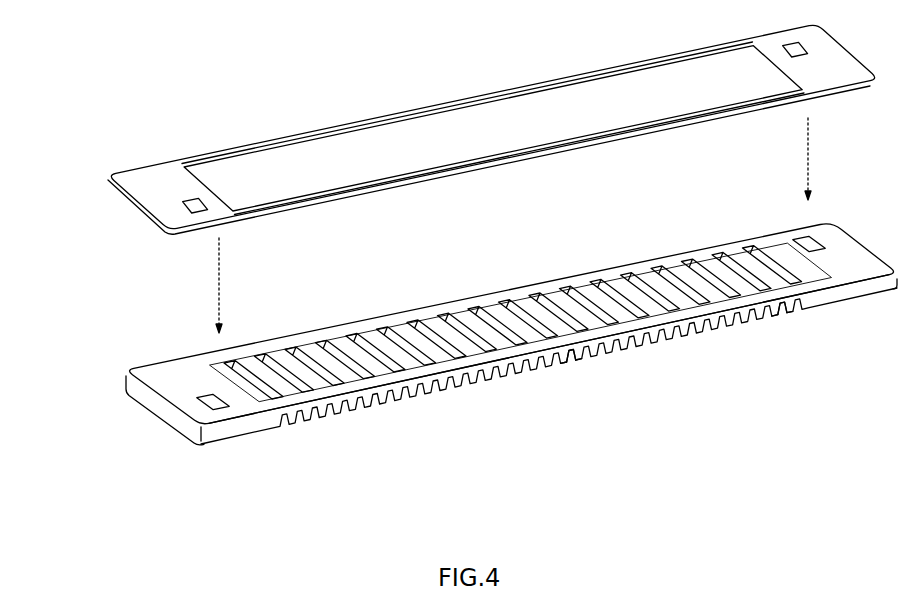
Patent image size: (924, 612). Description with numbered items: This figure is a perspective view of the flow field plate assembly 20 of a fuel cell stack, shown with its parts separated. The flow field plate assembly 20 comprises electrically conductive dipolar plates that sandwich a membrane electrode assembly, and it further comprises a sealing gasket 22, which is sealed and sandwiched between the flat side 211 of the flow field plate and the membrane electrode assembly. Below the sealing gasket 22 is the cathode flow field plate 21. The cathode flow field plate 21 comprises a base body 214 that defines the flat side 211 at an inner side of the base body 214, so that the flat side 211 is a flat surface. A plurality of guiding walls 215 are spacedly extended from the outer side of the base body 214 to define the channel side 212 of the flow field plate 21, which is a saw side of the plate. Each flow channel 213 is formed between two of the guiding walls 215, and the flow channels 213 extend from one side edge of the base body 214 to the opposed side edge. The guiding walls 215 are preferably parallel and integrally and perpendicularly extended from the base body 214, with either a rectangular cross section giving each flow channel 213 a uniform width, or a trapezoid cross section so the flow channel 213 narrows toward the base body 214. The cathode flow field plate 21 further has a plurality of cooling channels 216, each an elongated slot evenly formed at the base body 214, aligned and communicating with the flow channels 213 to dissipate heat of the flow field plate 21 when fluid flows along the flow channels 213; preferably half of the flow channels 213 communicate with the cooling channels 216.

The flow field plate assembly 20 is at (73, 123).
The sealing gasket 22 is at (148, 175).
The cathode flow field plate 21 is at (118, 356).
The flat side 211 is at (164, 388).
The channel side 212 is at (280, 436).
The flow channel 213 is at (581, 372).
The base body 214 is at (809, 268).
The guiding wall 215 is at (564, 372).
The cooling channel 216 is at (428, 305).